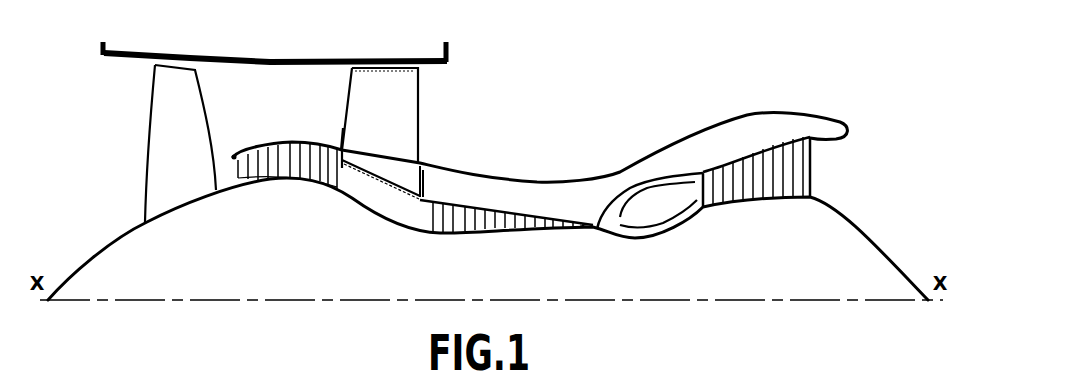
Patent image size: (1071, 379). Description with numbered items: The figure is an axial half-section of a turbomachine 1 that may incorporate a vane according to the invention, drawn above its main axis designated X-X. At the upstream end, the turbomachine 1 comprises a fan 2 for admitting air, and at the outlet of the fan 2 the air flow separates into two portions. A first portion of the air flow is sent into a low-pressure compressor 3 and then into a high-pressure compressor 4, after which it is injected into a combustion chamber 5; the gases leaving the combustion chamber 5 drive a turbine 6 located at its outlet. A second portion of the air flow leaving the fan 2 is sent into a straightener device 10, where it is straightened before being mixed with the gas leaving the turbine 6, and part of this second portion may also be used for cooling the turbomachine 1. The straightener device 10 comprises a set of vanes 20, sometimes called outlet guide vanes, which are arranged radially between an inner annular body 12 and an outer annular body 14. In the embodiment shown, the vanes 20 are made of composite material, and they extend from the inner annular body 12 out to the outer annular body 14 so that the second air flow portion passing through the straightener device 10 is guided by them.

The turbomachine 1 is at (527, 92).
The fan 2 is at (170, 130).
The low-pressure compressor 3 is at (257, 146).
The high-pressure compressor 4 is at (487, 203).
The combustion chamber 5 is at (647, 205).
The turbine 6 is at (718, 158).
The straightener device 10 is at (338, 125).
The inner annular body 12 is at (363, 170).
The outer annular body 14 is at (398, 58).
The vanes 20 is at (397, 92).